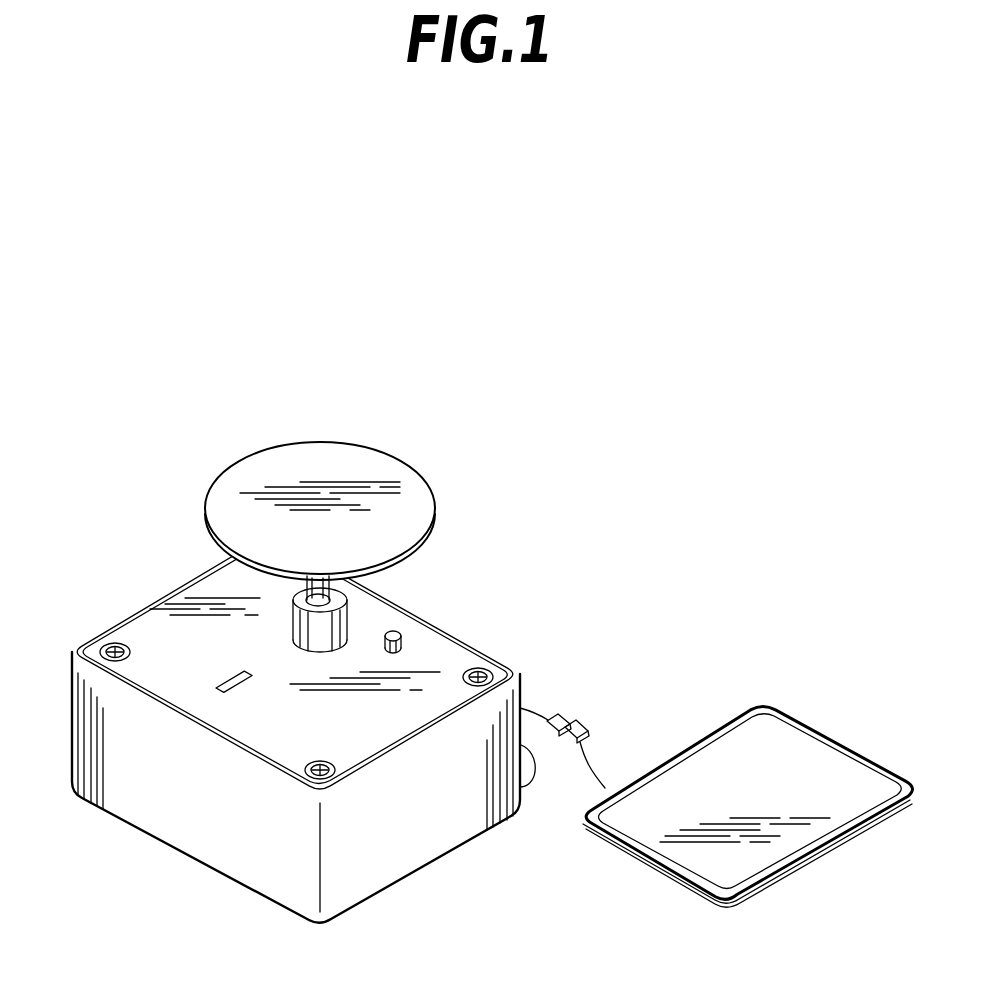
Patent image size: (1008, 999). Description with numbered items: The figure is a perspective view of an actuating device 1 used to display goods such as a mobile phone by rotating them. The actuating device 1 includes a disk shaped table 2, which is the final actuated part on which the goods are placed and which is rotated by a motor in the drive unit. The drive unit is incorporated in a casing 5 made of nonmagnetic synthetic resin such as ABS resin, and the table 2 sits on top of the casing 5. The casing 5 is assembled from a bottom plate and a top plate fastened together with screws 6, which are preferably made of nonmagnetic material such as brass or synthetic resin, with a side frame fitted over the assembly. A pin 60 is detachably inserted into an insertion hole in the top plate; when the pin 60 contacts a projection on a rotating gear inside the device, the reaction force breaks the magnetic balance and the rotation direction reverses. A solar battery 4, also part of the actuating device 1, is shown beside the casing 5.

The actuating device 1 is at (487, 283).
The table 2 is at (370, 469).
The solar battery 4 is at (703, 750).
The casing 5 is at (262, 869).
The screws 6 is at (110, 648).
The pin 60 is at (398, 632).